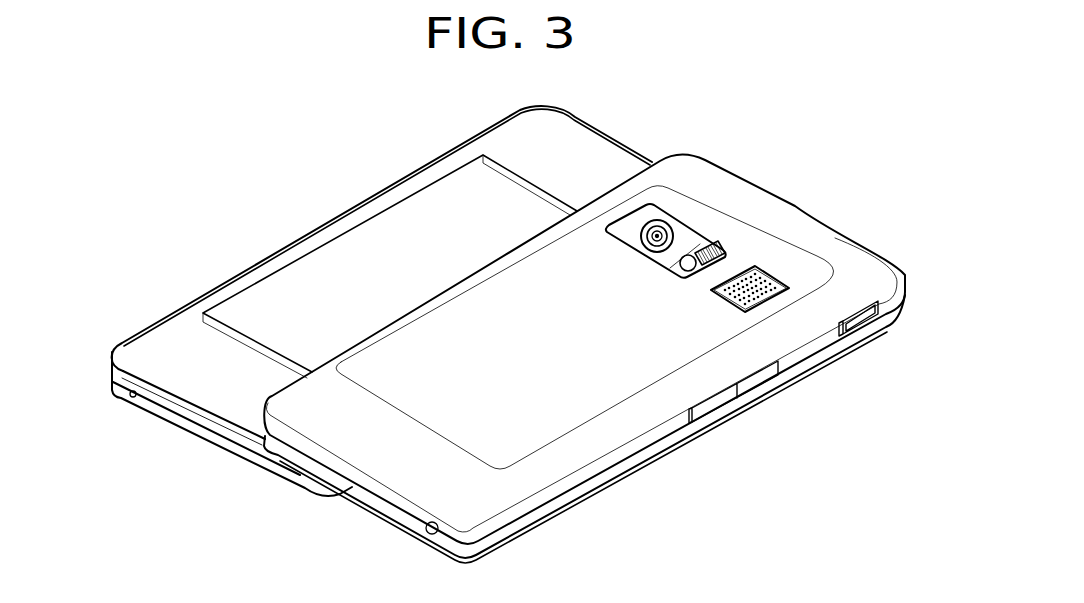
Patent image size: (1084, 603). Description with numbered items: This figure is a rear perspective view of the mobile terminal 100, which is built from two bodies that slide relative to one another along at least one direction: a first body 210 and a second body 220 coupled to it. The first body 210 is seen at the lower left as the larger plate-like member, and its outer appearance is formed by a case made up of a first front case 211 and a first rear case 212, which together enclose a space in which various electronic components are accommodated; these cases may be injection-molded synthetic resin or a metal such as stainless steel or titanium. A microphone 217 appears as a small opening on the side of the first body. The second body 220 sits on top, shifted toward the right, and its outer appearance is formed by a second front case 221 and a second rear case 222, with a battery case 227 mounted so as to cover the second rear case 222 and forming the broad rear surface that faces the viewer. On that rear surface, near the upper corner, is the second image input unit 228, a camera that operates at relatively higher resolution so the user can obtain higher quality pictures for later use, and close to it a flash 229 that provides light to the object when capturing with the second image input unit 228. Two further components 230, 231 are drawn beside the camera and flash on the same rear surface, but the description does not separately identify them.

The mobile terminal 100 is at (584, 335).
The first body 210 is at (363, 315).
The first front case 211 is at (232, 452).
The first rear case 212 is at (205, 427).
The microphone 217 is at (127, 402).
The second body 220 is at (584, 366).
The second front case 221 is at (648, 460).
The second rear case 222 is at (584, 366).
The battery case 227 is at (515, 488).
The second image input unit 228 is at (662, 230).
The flash 229 is at (708, 250).
The sensor 230 is at (695, 248).
The speaker 231 is at (768, 278).